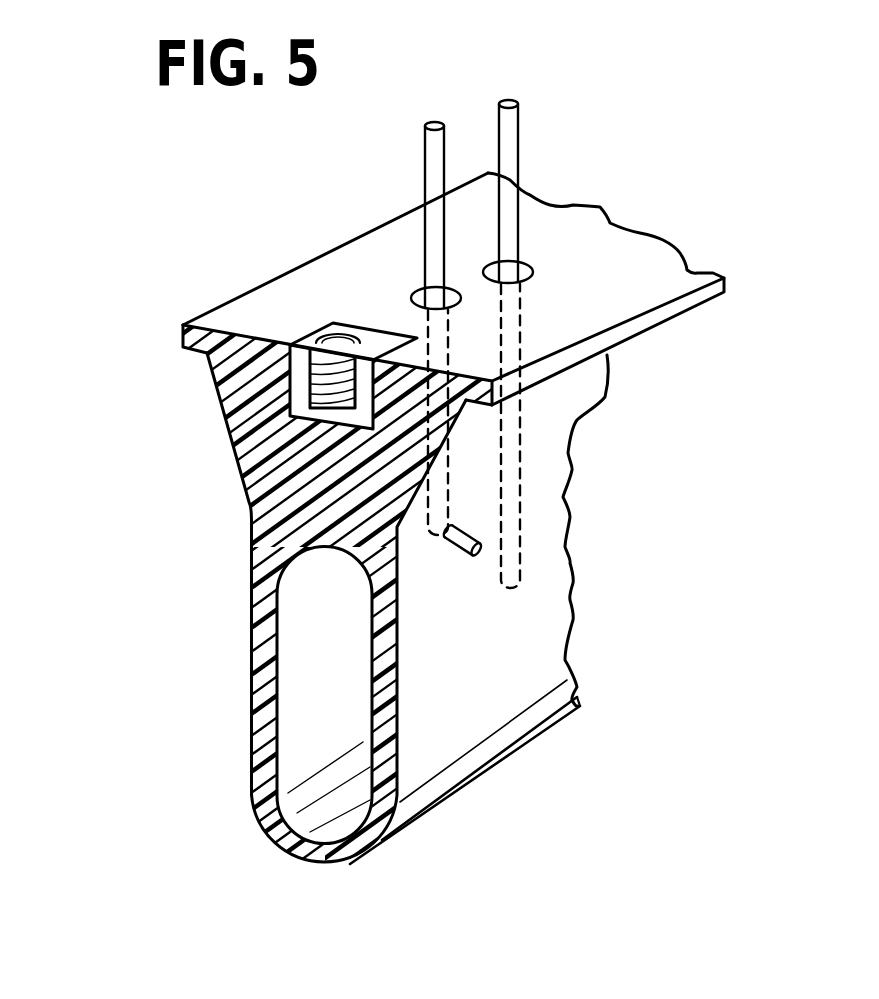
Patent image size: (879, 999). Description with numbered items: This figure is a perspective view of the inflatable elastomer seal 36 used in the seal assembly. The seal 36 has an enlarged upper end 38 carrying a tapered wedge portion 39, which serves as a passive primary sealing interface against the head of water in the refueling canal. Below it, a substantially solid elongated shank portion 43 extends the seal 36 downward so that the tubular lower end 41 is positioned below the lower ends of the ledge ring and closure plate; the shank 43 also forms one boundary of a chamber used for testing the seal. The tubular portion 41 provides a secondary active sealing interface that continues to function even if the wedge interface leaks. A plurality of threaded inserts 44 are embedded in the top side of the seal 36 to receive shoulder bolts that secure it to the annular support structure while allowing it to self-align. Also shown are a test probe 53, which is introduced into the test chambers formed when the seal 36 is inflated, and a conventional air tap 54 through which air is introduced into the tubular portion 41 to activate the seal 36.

The inflatable elastomer seal 36 is at (176, 629).
The enlarged upper end 38 is at (647, 322).
The tapered wedge portion 39 is at (233, 427).
The tubular lower end 41 is at (270, 744).
The elongated shank portion 43 is at (307, 535).
The threaded insert 44 is at (320, 330).
The test probe 53 is at (455, 553).
The air tap 54 is at (518, 128).